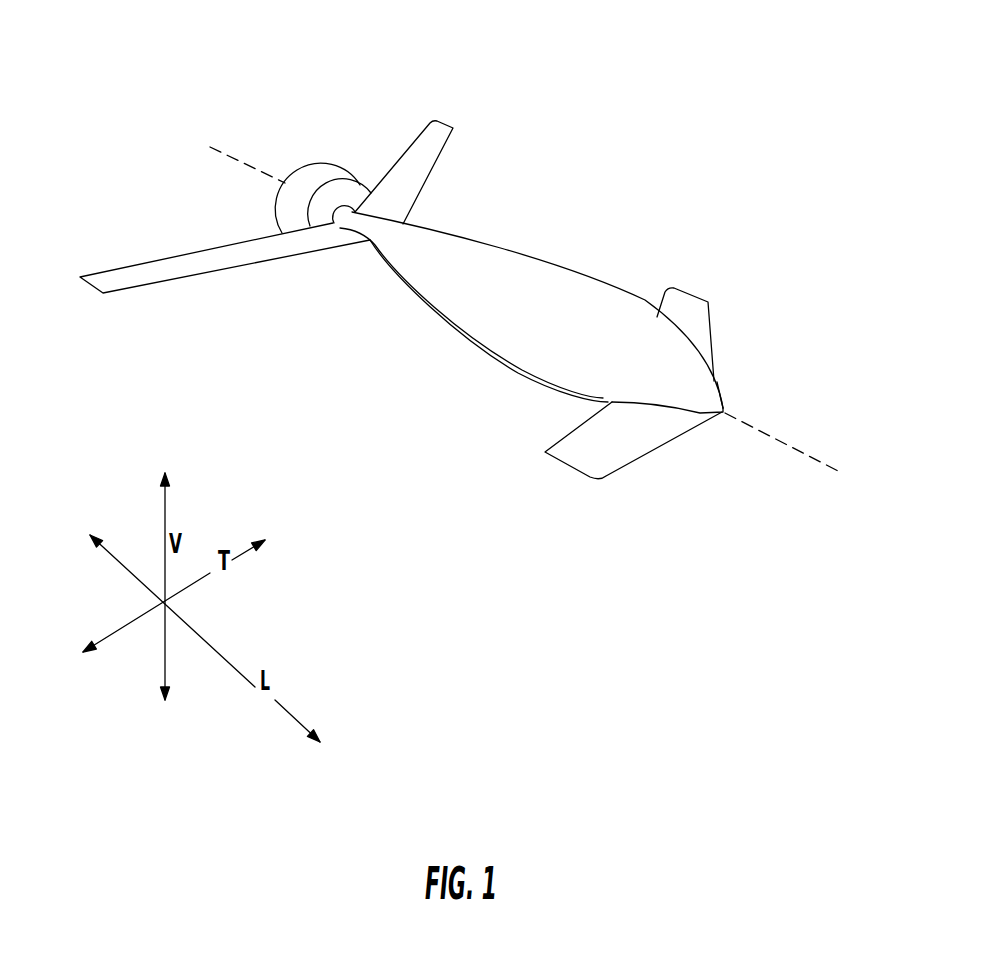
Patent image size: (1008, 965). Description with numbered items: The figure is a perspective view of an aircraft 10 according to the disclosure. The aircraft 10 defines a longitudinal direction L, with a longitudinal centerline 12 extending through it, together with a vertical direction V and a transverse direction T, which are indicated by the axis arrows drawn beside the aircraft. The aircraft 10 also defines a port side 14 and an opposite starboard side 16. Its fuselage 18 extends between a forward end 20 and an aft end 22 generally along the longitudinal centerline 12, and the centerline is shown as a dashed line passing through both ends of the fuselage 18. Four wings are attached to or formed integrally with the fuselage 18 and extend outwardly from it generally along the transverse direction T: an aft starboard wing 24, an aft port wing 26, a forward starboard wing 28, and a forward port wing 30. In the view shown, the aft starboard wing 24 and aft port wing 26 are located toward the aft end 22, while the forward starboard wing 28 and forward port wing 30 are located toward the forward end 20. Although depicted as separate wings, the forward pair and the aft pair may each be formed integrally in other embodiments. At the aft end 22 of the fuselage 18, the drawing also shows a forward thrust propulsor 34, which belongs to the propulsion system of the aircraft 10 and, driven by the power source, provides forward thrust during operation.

The aircraft 10 is at (663, 75).
The longitudinal centerline 12 is at (758, 430).
The port side 14 is at (670, 168).
The starboard side 16 is at (470, 403).
The fuselage 18 is at (543, 285).
The forward end 20 is at (720, 430).
The aft end 22 is at (313, 148).
The aft starboard wing 24 is at (200, 278).
The aft port wing 26 is at (438, 142).
The forward starboard wing 28 is at (595, 460).
The forward port wing 30 is at (698, 318).
The forward thrust propulsor 34 is at (330, 170).